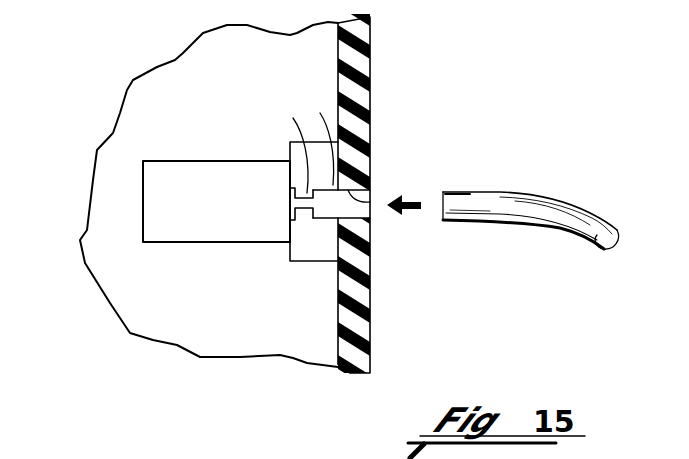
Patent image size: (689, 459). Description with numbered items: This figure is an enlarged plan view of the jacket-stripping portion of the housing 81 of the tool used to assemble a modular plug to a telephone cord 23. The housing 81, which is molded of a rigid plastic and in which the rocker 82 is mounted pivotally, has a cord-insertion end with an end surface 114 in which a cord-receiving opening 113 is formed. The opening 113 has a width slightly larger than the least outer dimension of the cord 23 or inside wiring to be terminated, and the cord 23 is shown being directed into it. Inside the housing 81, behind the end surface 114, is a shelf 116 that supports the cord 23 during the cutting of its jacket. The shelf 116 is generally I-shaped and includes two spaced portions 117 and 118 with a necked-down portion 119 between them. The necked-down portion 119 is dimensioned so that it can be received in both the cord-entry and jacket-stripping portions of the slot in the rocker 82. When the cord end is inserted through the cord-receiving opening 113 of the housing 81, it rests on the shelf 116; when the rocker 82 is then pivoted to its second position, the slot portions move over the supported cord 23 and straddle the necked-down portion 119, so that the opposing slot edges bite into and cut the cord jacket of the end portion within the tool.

The cord 23 is at (534, 188).
The housing 81 is at (370, 100).
The rocker 82 is at (209, 240).
The cord-receiving opening 113 is at (370, 202).
The end surface 114 is at (350, 66).
The shelf 116 is at (314, 227).
The spaced portion 117 is at (289, 161).
The spaced portion 118 is at (320, 113).
The necked-down portion 119 is at (293, 118).